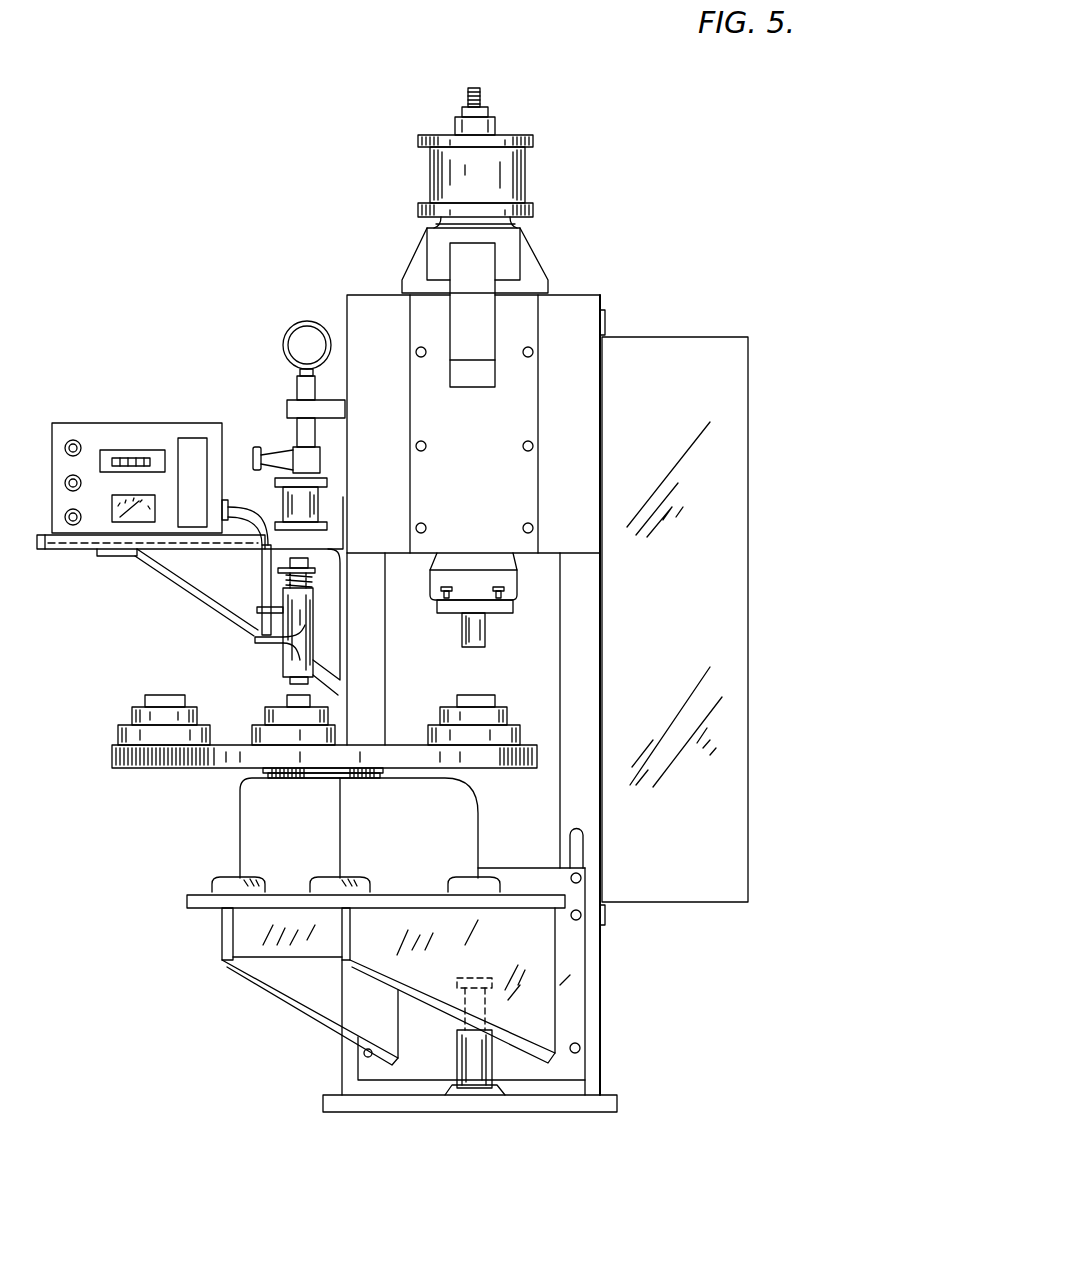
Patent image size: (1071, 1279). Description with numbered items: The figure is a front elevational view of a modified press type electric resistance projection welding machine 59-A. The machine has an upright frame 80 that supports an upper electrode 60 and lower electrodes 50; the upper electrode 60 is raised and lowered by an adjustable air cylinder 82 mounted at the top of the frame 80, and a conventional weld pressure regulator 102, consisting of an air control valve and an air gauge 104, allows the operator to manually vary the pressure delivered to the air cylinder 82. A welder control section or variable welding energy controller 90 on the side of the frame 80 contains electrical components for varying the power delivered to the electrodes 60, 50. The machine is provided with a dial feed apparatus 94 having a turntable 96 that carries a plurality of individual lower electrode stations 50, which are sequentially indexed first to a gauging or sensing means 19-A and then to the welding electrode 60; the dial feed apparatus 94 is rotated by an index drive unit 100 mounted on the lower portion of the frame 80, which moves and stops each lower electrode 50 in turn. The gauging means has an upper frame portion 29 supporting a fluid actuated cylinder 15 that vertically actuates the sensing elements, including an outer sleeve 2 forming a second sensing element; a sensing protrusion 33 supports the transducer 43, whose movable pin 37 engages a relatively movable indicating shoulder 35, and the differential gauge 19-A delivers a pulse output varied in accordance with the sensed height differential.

The outer sleeve 2 is at (316, 638).
The fluid actuated cylinder 15 is at (282, 512).
The differential gauge 19-A is at (100, 428).
The upper frame portion 29 is at (73, 550).
The sensing protrusion 33 is at (258, 610).
The indicating shoulder 35 is at (262, 644).
The movable pin 37 is at (257, 636).
The electrical-mechanical transducer 43 is at (262, 566).
The lower electrode 50 is at (156, 695).
The welding machine 59-A is at (594, 292).
The upper electrode 60 is at (462, 632).
The upright frame 80 is at (347, 298).
The air cylinder 82 is at (432, 150).
The variable welding energy controller 90 is at (706, 356).
The dial feed apparatus 94 is at (218, 940).
The turntable 96 is at (194, 757).
The index drive unit 100 is at (263, 830).
The weld pressure regulator 102 is at (276, 452).
The air gauge 104 is at (307, 344).